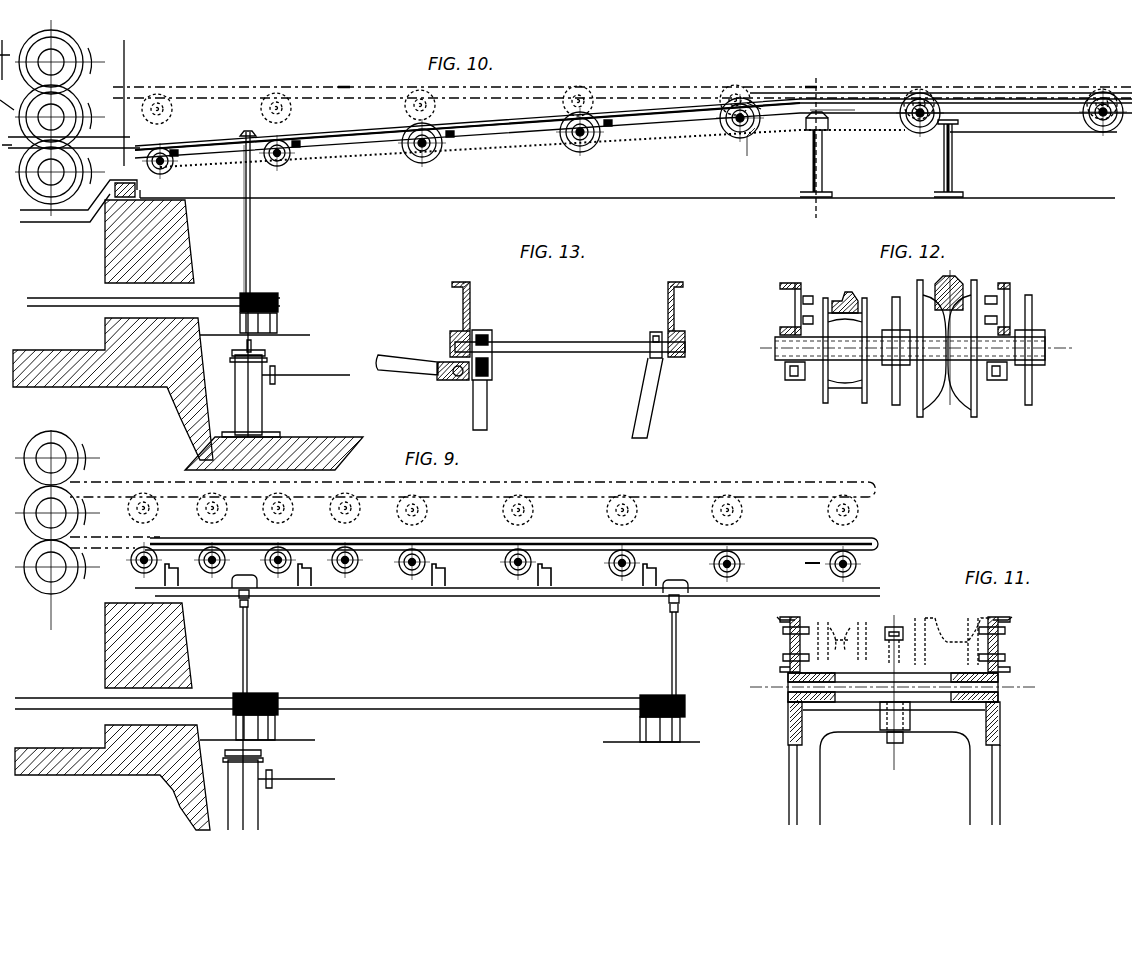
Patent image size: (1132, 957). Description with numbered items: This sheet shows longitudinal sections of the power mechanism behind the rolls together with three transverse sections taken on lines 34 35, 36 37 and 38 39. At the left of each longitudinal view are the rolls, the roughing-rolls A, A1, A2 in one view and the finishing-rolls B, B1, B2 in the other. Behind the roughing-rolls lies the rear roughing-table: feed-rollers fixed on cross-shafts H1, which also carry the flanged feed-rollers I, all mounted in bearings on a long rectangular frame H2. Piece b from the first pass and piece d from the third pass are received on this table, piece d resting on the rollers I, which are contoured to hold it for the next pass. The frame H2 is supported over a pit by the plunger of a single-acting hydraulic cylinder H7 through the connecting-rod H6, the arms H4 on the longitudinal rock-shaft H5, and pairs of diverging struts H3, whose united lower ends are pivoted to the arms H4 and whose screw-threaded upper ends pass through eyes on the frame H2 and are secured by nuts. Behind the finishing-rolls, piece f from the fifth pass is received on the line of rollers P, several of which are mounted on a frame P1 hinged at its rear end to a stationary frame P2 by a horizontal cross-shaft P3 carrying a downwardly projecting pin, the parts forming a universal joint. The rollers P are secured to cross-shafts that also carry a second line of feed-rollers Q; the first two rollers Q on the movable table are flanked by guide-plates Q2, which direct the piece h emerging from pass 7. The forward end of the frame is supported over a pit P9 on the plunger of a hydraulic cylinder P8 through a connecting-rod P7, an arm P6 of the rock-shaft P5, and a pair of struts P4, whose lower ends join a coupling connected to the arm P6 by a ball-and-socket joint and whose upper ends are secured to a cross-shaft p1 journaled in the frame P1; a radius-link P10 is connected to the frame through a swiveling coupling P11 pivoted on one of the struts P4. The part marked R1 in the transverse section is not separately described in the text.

In FIG. 9, the pass 7 is at (735, 575).
In FIG. 10, the section line 34 is at (816, 205).
In FIG. 10, the section line 35 is at (817, 141).
In FIG. 10, the section line 36 is at (758, 150).
In FIG. 10, the section line 37 is at (758, 100).
In FIG. 10, the section line 38 is at (257, 213).
In FIG. 10, the section line 39 is at (248, 130).
In FIG. 9, the roughing-roll A is at (51, 458).
In FIG. 9, the roughing-roll A1 is at (51, 513).
In FIG. 9, the roughing-roll A2 is at (51, 567).
In FIG. 10, the finishing-roll B is at (51, 62).
In FIG. 10, the finishing-roll B1 is at (51, 117).
In FIG. 10, the finishing-roll B2 is at (51, 172).
In FIG. 10, the piece h is at (620, 116).
In FIG. 12, the piece h is at (842, 300).
In FIG. 11, the piece h is at (839, 624).
In FIG. 10, the feed-rollers Q is at (282, 162).
In FIG. 12, the feed-rollers Q is at (845, 350).
In FIG. 10, the guide-plates Q2 is at (629, 104).
In FIG. 12, the rollers P is at (947, 343).
In FIG. 10, the frame P1 is at (417, 158).
In FIG. 13, the frame P1 is at (462, 306).
In FIG. 12, the frame P1 is at (1015, 290).
In FIG. 11, the frame P1 is at (788, 634).
In FIG. 13, the cross-shaft p1 is at (580, 333).
In FIG. 11, the cross-shaft p1 is at (883, 736).
In FIG. 11, the stationary frame P2 is at (823, 800).
In FIG. 11, the cross-shaft P3 is at (893, 687).
In FIG. 10, the struts P4 is at (252, 262).
In FIG. 13, the struts P4 is at (487, 418).
In FIG. 10, the rock-shaft P5 is at (292, 302).
In FIG. 10, the arm P6 is at (238, 326).
In FIG. 10, the connecting-rod P7 is at (267, 344).
In FIG. 10, the hydraulic cylinder P8 is at (263, 414).
In FIG. 10, the pit P9 is at (193, 242).
In FIG. 13, the radius-link P10 is at (398, 356).
In FIG. 13, the swiveling coupling P11 is at (496, 374).
In FIG. 12, the bracket R1 is at (796, 319).
In FIG. 10, the piece b is at (905, 130).
In FIG. 9, the piece d is at (511, 541).
In FIG. 12, the piece f is at (960, 284).
In FIG. 11, the piece f is at (942, 624).
In FIG. 9, the flanged feed-rollers I is at (493, 530).
In FIG. 9, the cross-shafts H1 is at (147, 542).
In FIG. 9, the frame H2 is at (462, 592).
In FIG. 9, the struts H3 is at (247, 654).
In FIG. 9, the arms H4 is at (236, 727).
In FIG. 9, the rock-shaft H5 is at (350, 699).
In FIG. 9, the connecting-rod H6 is at (270, 744).
In FIG. 9, the hydraulic cylinder H7 is at (260, 819).